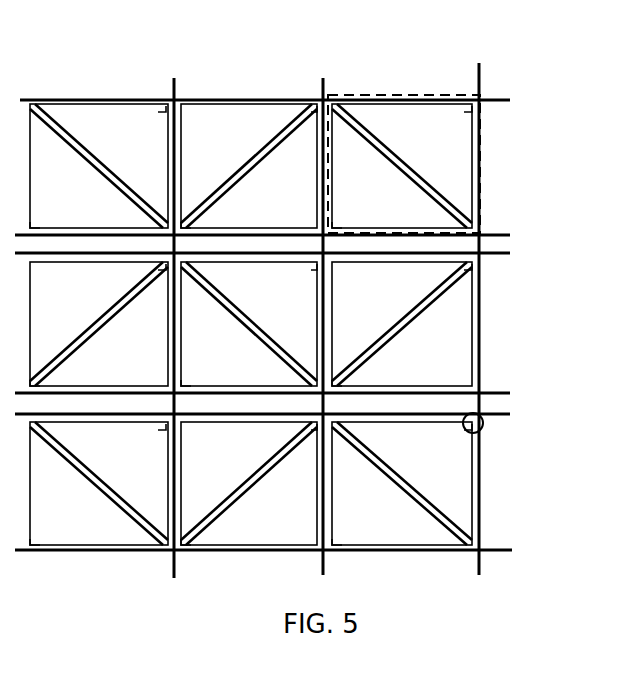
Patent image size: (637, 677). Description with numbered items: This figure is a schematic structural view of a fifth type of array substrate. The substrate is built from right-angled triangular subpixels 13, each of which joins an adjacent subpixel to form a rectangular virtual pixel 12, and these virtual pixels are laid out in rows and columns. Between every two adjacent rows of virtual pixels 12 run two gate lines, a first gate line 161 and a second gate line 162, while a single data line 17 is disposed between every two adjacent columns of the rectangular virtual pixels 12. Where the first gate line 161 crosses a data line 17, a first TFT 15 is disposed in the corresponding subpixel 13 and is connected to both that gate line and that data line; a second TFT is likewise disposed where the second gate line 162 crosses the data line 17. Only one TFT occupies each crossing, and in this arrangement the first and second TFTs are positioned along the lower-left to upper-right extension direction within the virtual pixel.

The virtual pixel 12 is at (398, 95).
The subpixel 13 is at (75, 105).
The TFT 15 is at (478, 431).
The data line 17 is at (323, 78).
The first gate line 161 is at (492, 232).
The second gate line 162 is at (483, 255).